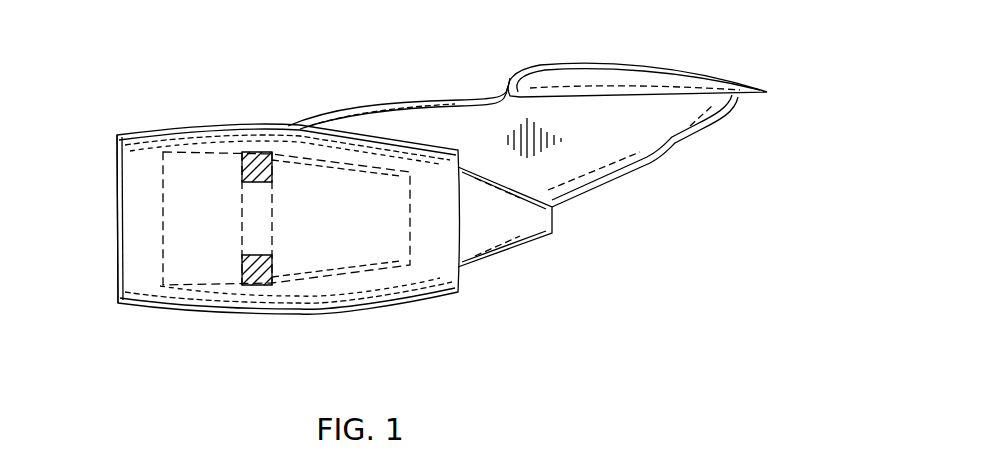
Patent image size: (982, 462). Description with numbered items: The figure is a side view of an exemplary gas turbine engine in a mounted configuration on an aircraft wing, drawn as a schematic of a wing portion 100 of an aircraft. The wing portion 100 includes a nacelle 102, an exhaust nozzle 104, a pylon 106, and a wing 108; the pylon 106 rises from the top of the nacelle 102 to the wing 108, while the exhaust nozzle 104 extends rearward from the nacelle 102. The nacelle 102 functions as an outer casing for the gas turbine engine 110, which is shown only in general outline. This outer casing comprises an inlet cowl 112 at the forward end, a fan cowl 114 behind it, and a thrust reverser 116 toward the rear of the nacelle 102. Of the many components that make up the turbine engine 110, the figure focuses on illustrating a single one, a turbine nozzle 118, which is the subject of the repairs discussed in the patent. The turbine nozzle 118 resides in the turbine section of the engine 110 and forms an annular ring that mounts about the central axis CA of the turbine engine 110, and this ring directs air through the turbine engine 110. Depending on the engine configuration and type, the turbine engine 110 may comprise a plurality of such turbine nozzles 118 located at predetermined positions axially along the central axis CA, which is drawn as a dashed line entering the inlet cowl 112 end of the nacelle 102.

The wing portion 100 is at (176, 88).
The nacelle 102 is at (275, 320).
The exhaust nozzle 104 is at (512, 240).
The pylon 106 is at (640, 150).
The wing 108 is at (598, 62).
The gas turbine engine 110 is at (183, 290).
The inlet cowl 112 is at (150, 134).
The fan cowl 114 is at (230, 134).
The thrust reverser 116 is at (372, 146).
The turbine nozzle 118 is at (257, 176).
The central axis CA is at (112, 220).